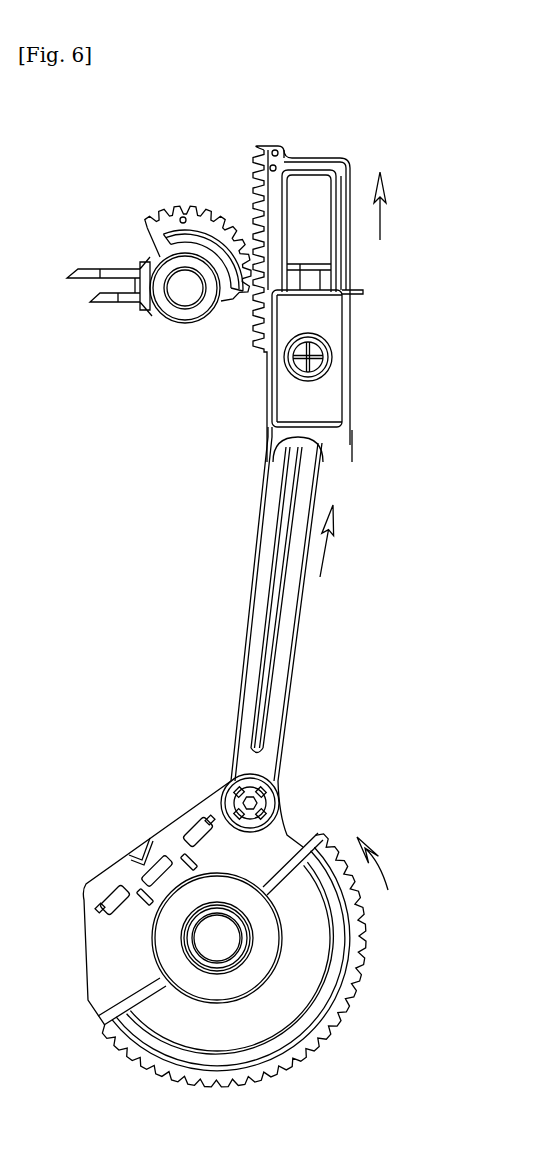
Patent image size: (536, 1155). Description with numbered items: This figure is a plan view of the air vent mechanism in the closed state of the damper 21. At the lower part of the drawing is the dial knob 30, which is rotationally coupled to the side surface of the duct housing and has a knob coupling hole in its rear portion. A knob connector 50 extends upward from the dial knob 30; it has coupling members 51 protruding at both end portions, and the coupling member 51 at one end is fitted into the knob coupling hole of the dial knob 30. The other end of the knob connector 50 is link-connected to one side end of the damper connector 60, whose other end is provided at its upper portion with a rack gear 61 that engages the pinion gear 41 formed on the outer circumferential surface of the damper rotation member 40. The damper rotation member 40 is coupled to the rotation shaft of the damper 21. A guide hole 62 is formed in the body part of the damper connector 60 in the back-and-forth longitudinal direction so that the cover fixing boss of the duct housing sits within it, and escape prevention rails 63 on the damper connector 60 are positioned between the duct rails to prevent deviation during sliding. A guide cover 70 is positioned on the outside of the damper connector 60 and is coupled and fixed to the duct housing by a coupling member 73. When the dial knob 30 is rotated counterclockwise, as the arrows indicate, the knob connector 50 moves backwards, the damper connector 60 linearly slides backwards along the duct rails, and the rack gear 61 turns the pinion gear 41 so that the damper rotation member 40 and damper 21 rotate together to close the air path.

The damper 21 is at (110, 273).
The dial knob 30 is at (300, 997).
The damper rotation member 40 is at (160, 295).
The pinion gear 41 is at (192, 208).
The knob connector 50 is at (270, 557).
The coupling member 51 is at (262, 786).
The damper connector 60 is at (369, 276).
The rack gear 61 is at (253, 193).
The guide hole 62 is at (287, 190).
The escape prevention rail 63 is at (343, 202).
The guide cover 70 is at (354, 355).
The coupling member 73 is at (322, 350).